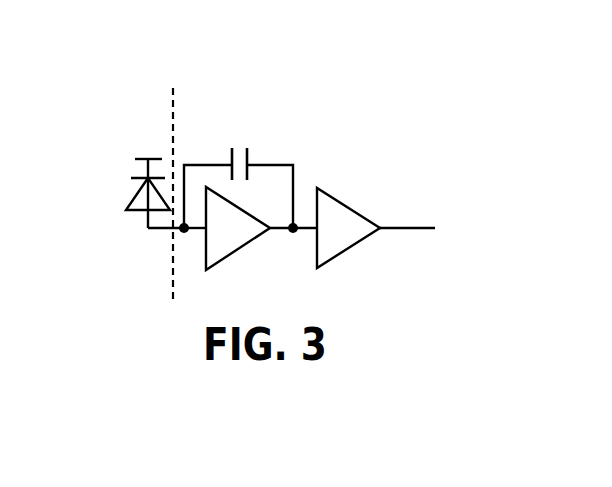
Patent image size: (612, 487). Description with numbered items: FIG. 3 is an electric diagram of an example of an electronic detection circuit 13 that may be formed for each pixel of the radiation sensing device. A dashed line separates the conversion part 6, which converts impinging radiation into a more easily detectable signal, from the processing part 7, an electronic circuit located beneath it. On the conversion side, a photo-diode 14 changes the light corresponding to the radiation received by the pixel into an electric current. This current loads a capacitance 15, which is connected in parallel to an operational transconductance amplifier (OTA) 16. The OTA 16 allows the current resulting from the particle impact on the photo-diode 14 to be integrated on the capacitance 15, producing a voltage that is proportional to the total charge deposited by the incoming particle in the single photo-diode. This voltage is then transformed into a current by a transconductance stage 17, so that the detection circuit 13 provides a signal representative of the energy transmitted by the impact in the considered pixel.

The conversion part 6 is at (125, 276).
The processing part 7 is at (350, 312).
The electronic detection circuit 13 is at (312, 187).
The photo-diode 14 is at (138, 197).
The capacitance 15 is at (232, 157).
The operational transconductance amplifier (OTA) 16 is at (237, 250).
The transconductance stage gm 17 is at (345, 250).